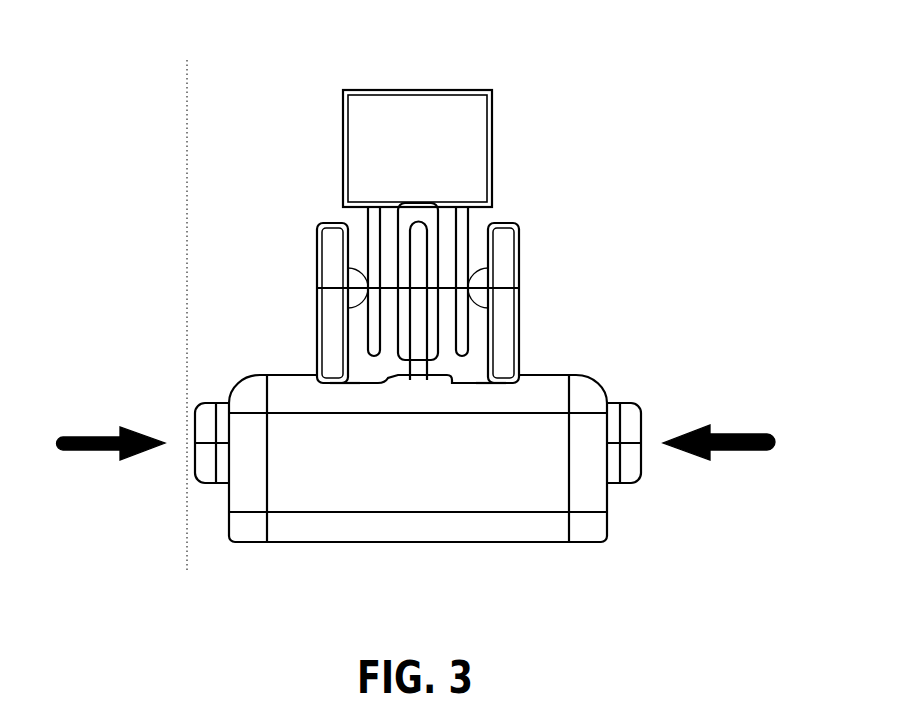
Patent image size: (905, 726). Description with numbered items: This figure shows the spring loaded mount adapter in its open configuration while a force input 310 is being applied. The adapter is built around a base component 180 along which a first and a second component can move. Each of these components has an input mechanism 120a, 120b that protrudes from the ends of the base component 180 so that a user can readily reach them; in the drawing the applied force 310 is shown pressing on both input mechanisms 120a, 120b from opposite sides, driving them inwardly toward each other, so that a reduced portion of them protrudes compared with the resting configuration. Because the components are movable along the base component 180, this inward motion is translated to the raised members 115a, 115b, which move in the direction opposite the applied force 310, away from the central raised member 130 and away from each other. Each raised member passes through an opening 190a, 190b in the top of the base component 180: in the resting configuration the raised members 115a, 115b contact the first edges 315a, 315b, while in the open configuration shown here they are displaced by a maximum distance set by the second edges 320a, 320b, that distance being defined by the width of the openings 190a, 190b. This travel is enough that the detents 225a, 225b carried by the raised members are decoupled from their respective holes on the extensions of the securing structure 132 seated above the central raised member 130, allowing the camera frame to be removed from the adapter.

The securing structure 132 is at (383, 160).
The central raised member 130 is at (414, 254).
The detent 225a is at (474, 272).
The detent 225b is at (362, 284).
The first raised member 115a is at (525, 245).
The second raised member 115b is at (313, 250).
The first edge 315a is at (458, 365).
The first edge 315b is at (372, 366).
The second edge 320a is at (528, 372).
The second edge 320b is at (318, 372).
The force input 310 is at (94, 423).
The base component 180 is at (418, 458).
The input mechanism 120a is at (192, 470).
The input mechanism 120b is at (650, 467).
The opening 190a is at (496, 388).
The opening 190b is at (340, 388).